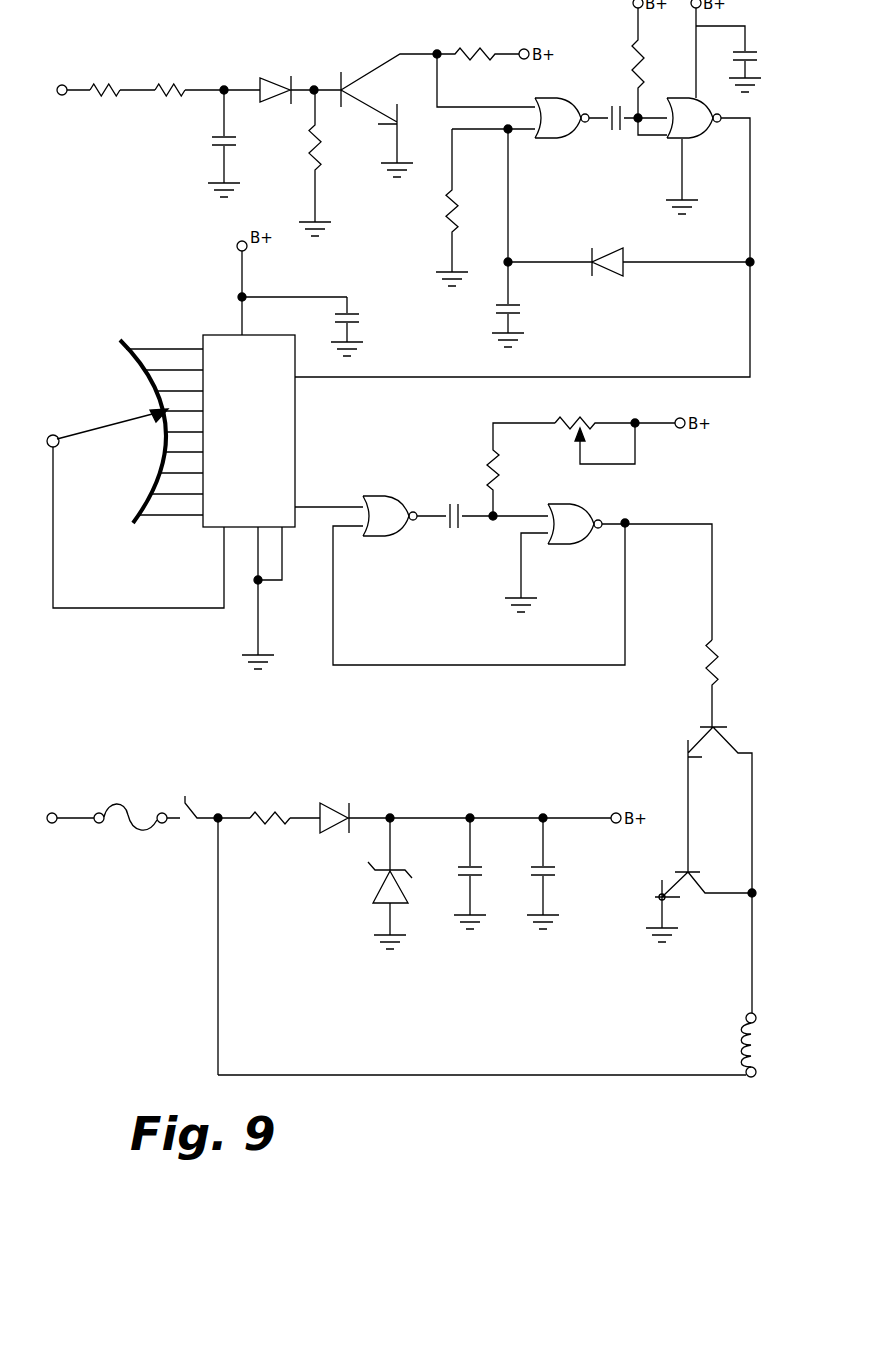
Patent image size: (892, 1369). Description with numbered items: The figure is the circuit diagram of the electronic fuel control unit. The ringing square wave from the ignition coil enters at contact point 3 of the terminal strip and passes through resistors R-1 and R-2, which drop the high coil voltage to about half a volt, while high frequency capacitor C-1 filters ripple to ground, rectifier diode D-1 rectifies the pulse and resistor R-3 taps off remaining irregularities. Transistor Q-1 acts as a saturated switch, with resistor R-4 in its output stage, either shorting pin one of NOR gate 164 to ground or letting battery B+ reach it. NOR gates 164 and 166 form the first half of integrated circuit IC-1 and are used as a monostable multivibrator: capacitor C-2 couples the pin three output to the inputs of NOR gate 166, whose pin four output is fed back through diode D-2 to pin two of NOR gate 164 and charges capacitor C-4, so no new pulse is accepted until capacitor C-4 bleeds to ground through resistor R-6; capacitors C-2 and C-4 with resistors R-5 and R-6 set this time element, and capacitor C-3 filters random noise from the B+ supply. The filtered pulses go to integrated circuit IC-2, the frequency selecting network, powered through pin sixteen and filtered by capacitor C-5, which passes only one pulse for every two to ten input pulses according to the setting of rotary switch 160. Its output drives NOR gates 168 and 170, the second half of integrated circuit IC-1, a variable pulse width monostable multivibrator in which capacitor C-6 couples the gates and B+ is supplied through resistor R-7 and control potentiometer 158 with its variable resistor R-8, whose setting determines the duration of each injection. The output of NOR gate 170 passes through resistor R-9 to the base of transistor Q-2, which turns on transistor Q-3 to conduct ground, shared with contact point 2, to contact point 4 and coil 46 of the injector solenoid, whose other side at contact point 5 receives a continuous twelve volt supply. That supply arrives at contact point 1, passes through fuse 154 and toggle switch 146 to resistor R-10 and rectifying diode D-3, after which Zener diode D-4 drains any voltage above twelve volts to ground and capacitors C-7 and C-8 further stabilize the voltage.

The contact point 3 is at (60, 84).
The resistor R-1 is at (118, 82).
The resistor R-2 is at (182, 82).
The high frequency capacitor C-1 is at (212, 138).
The rectifier diode D-1 is at (283, 72).
The resistor R-3 is at (300, 165).
The transistor Q-1 is at (336, 80).
The resistor R-4 is at (500, 30).
The NOR gate 164 is at (556, 139).
The resistor R-6 is at (446, 218).
The capacitor C-4 is at (524, 300).
The diode D-2 is at (597, 280).
The capacitor C-2 is at (616, 104).
The resistor R-5 is at (630, 72).
The capacitor C-3 is at (728, 56).
The NOR gate 166 is at (700, 136).
The integrated circuit IC-2 is at (300, 461).
The capacitor C-5 is at (356, 312).
The rotary switch 160 is at (60, 432).
The NOR gate 168 is at (372, 538).
The capacitor C-6 is at (452, 530).
The resistor R-7 is at (494, 468).
The variable resistor R-8 is at (560, 412).
The control potentiometer 158 is at (588, 456).
The NOR gate 170 is at (578, 500).
The integrated circuit IC-1 is at (757, 356).
The resistor R-9 is at (710, 668).
The transistor Q-2 is at (706, 726).
The transistor Q-3 is at (704, 870).
The contact point 2 is at (658, 900).
The contact point 4 is at (746, 1013).
The coil 46 is at (742, 1043).
The contact point 5 is at (751, 1080).
The contact point 1 is at (52, 823).
The fuse 154 is at (127, 834).
The toggle switch 146 is at (185, 796).
The resistor R-10 is at (292, 796).
The rectifying diode D-3 is at (348, 778).
The Zener diode D-4 is at (380, 890).
The capacitor C-7 is at (478, 880).
The capacitor C-8 is at (551, 880).